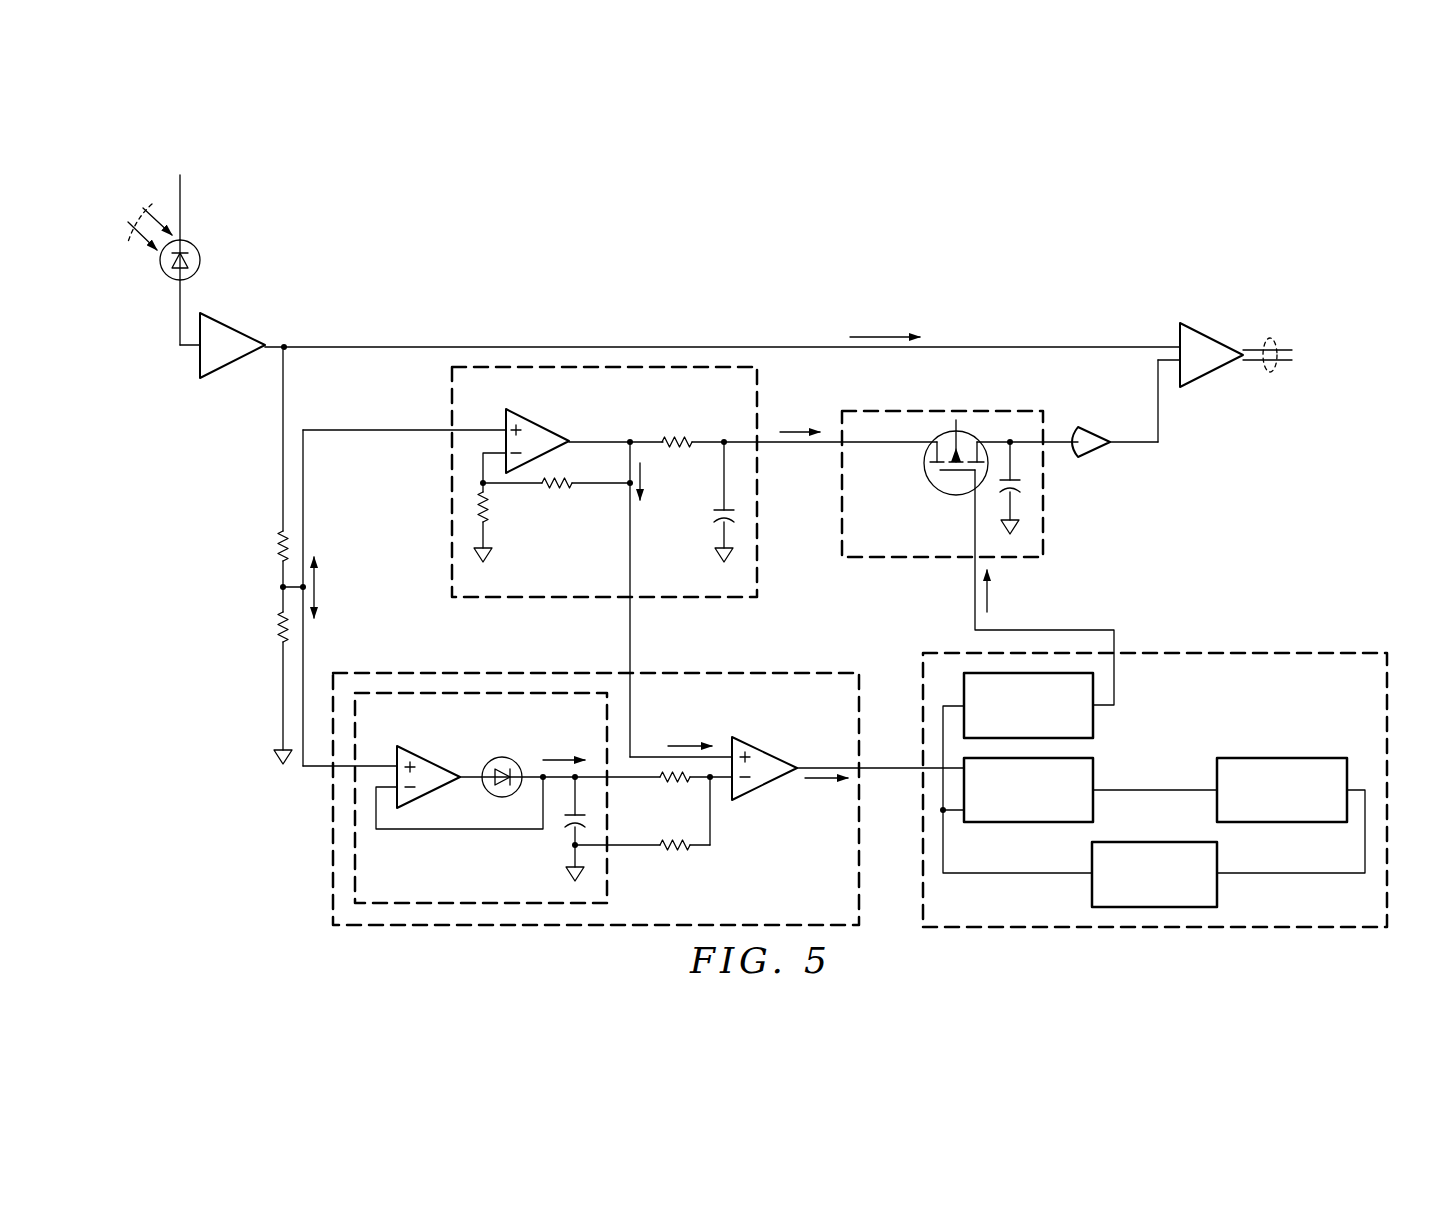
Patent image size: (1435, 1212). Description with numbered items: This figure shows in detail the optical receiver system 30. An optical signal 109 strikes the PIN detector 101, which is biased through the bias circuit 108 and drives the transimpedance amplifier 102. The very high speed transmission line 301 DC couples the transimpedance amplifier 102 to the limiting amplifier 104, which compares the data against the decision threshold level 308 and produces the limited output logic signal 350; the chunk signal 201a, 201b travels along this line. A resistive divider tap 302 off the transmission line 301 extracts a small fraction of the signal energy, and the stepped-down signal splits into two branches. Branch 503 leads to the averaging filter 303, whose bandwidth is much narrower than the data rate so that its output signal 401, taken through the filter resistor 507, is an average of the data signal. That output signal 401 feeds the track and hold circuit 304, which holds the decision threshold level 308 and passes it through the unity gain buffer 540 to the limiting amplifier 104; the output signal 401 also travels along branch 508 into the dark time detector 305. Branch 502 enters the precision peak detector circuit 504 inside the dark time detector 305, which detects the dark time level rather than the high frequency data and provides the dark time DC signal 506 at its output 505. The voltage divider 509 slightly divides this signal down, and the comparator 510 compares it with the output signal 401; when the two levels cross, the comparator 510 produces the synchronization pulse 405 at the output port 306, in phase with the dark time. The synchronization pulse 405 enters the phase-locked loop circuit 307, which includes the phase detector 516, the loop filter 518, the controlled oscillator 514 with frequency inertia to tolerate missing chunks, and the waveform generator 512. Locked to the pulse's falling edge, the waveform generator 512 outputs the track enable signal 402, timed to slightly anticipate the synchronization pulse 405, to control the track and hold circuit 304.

The bias circuit 108 is at (180, 182).
The optical signal 109 is at (132, 238).
The PIN detector 101 is at (172, 284).
The transimpedance amplifier 102 is at (236, 378).
The transmission line 301 is at (486, 345).
The chunk signal 201a is at (909, 308).
The chunk signal 201b is at (912, 310).
The limiting amplifier 104 is at (1212, 334).
The limited output logic signal 350 is at (1273, 372).
The decision threshold level 308 is at (1158, 402).
The unity gain buffer 540 is at (1095, 453).
The track and hold circuit 304 is at (962, 410).
The output signal of averaging filter 401 is at (785, 428).
The averaging filter 303 is at (452, 395).
The filter resistor 507 is at (680, 438).
The branch 508 is at (632, 547).
The branch 503 is at (305, 503).
The resistive divider tap 302 is at (283, 605).
The branch 502 is at (305, 652).
The dark time detector 305 is at (333, 878).
The precision peak detector circuit 504 is at (418, 737).
The dark time DC signal 506 is at (562, 758).
The output 505 is at (630, 782).
The voltage divider 509 is at (712, 835).
The comparator 510 is at (767, 746).
The synchronization pulse 405 is at (817, 790).
The output port 306 is at (880, 772).
The phase-locked loop circuit 307 is at (1322, 930).
The waveform generator 512 is at (1095, 722).
The phase detector 516 is at (1095, 785).
The loop filter 518 is at (1325, 758).
The controlled oscillator 514 is at (1218, 888).
The track enable signal 402 is at (990, 597).
The optical receiver system 30 is at (1040, 209).